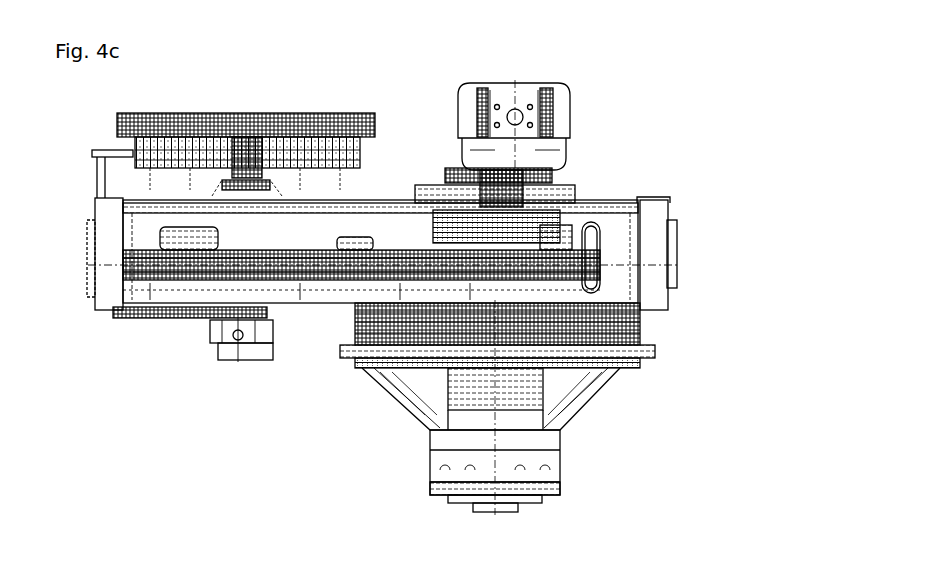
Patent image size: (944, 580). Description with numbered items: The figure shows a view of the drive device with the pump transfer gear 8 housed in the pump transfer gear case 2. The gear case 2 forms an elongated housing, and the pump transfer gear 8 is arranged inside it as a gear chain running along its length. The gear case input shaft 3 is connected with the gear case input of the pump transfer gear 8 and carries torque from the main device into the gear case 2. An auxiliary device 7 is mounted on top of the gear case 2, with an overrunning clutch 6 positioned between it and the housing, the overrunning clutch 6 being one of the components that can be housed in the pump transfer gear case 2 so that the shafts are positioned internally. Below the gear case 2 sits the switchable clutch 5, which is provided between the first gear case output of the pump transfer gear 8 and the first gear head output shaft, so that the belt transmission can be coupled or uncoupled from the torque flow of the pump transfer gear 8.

The gear case 2 is at (657, 202).
The gear case input shaft 3 is at (257, 110).
The switchable clutch 5 is at (548, 463).
The overrunning clutch 6 is at (527, 187).
The auxiliary device 7 is at (558, 120).
The pump transfer gear 8 is at (315, 275).